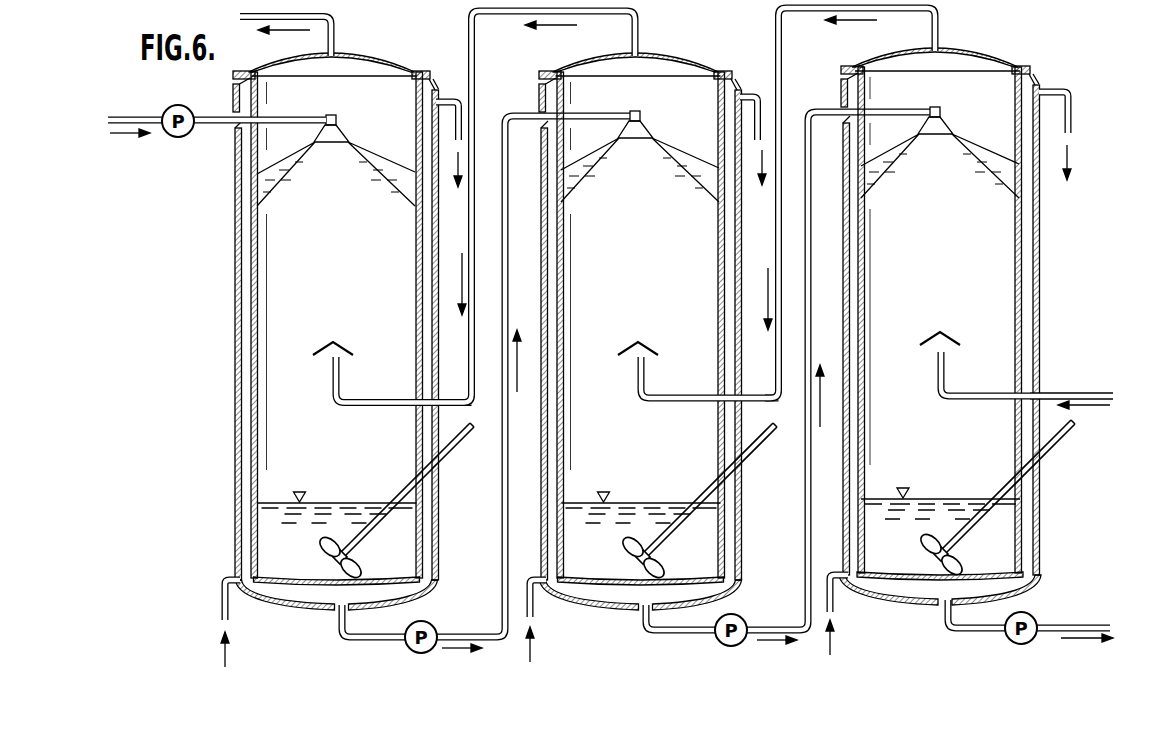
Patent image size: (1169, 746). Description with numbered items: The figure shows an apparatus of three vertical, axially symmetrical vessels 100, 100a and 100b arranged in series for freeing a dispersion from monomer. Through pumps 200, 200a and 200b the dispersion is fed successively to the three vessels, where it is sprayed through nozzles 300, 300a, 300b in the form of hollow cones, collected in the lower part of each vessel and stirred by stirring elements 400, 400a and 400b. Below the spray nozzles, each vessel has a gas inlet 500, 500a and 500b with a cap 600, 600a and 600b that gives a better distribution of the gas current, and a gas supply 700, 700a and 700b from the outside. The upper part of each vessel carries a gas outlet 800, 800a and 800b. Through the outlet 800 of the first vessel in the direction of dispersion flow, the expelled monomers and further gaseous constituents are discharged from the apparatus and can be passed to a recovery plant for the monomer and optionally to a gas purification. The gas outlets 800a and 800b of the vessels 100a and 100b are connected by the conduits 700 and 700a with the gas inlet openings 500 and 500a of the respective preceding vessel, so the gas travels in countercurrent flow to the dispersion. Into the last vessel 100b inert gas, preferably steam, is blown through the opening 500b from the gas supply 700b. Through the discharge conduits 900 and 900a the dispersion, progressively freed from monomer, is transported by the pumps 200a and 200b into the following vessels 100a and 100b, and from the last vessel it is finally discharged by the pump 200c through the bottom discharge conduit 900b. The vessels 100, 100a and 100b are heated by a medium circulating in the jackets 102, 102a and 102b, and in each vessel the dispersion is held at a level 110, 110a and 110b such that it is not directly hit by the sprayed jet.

The vessel 100 is at (252, 358).
The vessel 100a is at (557, 432).
The vessel 100b is at (1024, 322).
The jacket 102 is at (235, 232).
The jacket 102a is at (541, 228).
The jacket 102b is at (1040, 236).
The level 110 is at (282, 528).
The level 110a is at (708, 536).
The dispersion level 110b is at (1010, 538).
The pump 200 is at (178, 138).
The pump 200a is at (438, 627).
The pump 200b is at (747, 621).
The pump 200c is at (1037, 618).
The nozzle 300 is at (340, 132).
The nozzle 300a is at (643, 130).
The nozzle 300b is at (942, 126).
The stirring element 400 is at (455, 440).
The stirring element 400a is at (753, 440).
The stirring element 400b is at (1057, 437).
The gas inlet 500 is at (332, 358).
The gas inlet 500a is at (637, 358).
The gas inlet 500b is at (937, 354).
The cap 600 is at (336, 344).
The cap 600a is at (641, 344).
The cap 600b is at (946, 338).
The gas supply conduit 700 is at (476, 85).
The gas supply conduit 700a is at (783, 77).
The gas supply 700b is at (1085, 392).
The gas outlet 800 is at (342, 55).
The gas outlet 800a is at (646, 54).
The gas outlet 800b is at (946, 46).
The discharge conduit 900 is at (341, 633).
The discharge conduit 900a is at (645, 632).
The bottom drain line 900b is at (946, 630).